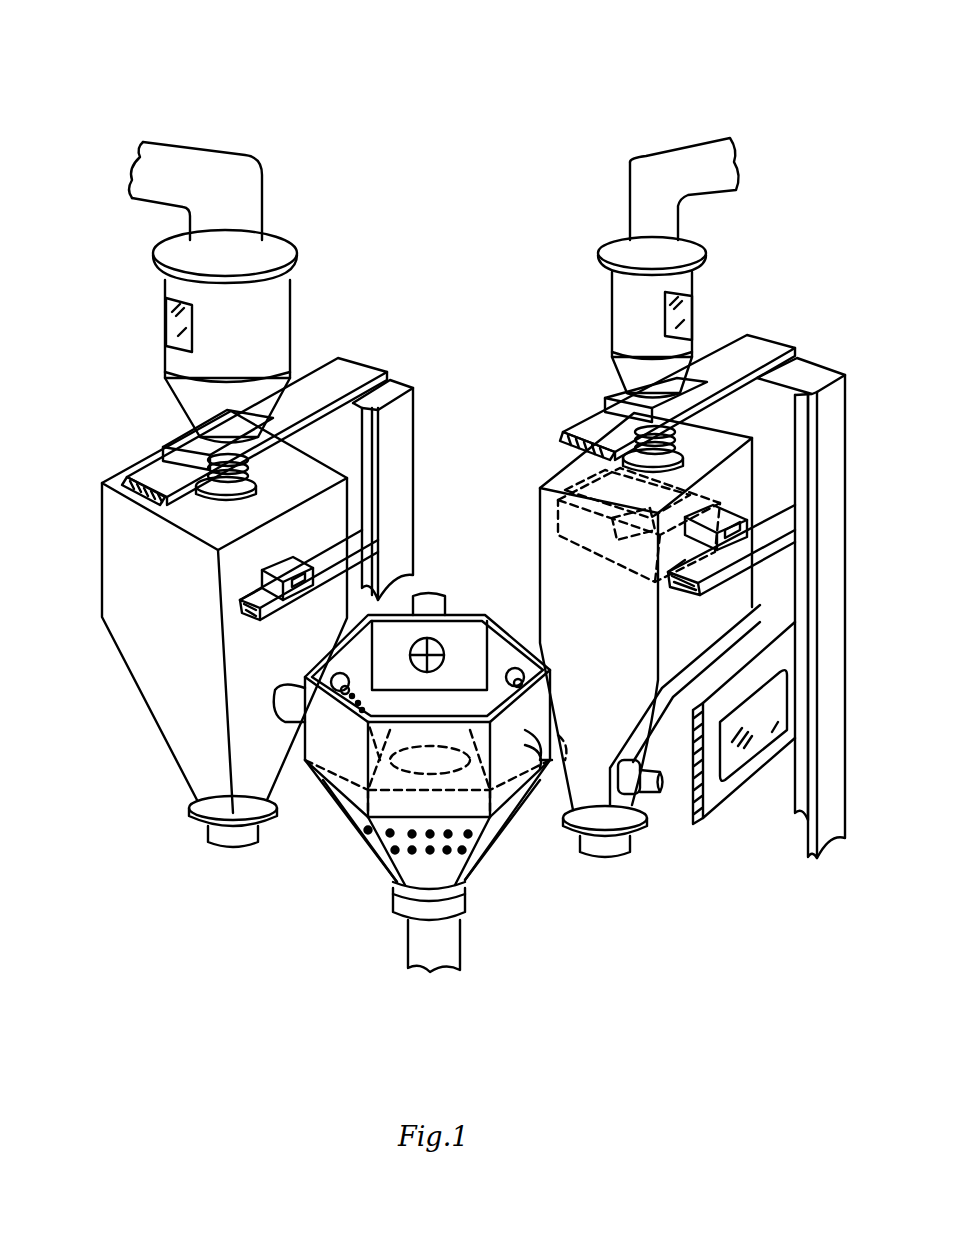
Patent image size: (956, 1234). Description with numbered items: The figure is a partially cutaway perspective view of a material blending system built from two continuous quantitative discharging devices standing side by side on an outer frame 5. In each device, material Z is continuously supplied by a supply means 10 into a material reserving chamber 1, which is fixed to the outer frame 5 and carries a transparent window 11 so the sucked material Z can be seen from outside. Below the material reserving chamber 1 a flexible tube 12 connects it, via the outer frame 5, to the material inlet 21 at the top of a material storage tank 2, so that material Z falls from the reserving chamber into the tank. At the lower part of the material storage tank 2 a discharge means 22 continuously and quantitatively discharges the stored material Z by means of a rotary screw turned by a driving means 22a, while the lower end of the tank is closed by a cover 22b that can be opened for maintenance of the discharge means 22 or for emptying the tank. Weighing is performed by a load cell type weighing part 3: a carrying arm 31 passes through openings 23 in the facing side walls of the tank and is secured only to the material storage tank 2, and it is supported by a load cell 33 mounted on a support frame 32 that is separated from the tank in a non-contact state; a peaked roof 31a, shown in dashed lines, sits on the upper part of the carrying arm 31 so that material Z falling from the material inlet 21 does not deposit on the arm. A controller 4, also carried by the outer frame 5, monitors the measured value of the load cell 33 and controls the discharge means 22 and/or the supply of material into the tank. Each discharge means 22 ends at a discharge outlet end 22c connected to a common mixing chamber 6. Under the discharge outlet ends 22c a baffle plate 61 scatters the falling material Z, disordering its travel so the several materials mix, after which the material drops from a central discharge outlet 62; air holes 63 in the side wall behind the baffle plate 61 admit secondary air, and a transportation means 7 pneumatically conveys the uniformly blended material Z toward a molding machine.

The supply means 10 is at (174, 152).
The material reserving chamber 1 is at (272, 296).
The transparent window 11 is at (181, 343).
The outer frame 5 is at (299, 398).
The flexible tube 12 is at (250, 462).
The material inlet 21 is at (255, 490).
The material storage tank 2 is at (110, 510).
The discharge means 22 is at (285, 722).
The driving means 22a is at (640, 812).
The cover 22b is at (230, 848).
The discharge outlet end 22c is at (331, 676).
The openings 23 is at (244, 592).
The load cell type weighing part 3 is at (576, 548).
The carrying arm 31 is at (288, 562).
The roof 31a is at (570, 478).
The support frame 32 is at (258, 612).
The load cell 33 is at (628, 545).
The controller 4 is at (766, 716).
The mixing chamber 6 is at (350, 840).
The baffle plate 61 is at (486, 828).
The central discharge outlet 62 is at (343, 824).
The air holes 63 is at (420, 852).
The transportation means 7 is at (426, 950).
The material Z is at (430, 688).